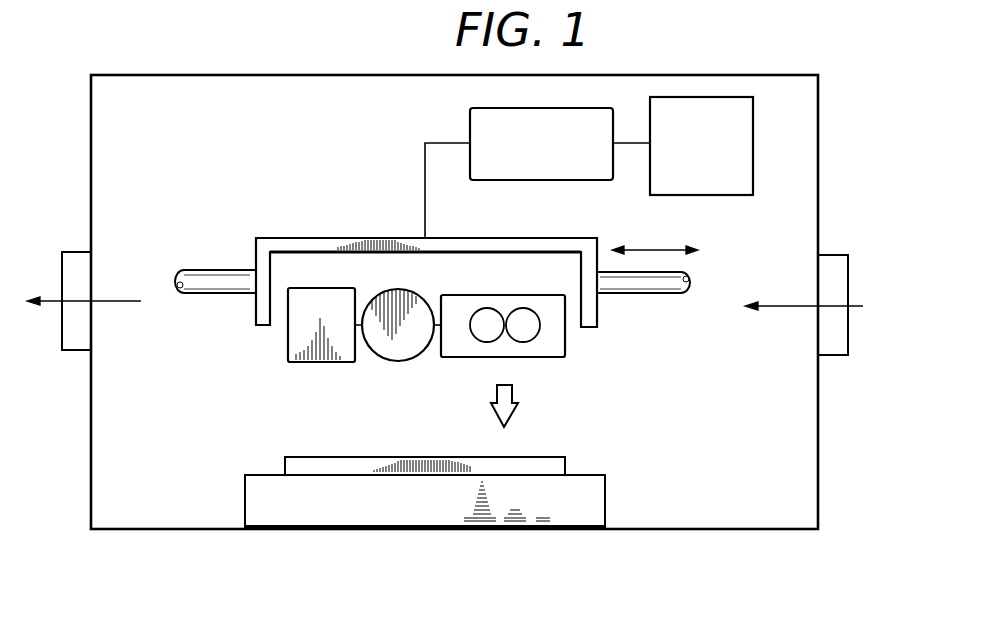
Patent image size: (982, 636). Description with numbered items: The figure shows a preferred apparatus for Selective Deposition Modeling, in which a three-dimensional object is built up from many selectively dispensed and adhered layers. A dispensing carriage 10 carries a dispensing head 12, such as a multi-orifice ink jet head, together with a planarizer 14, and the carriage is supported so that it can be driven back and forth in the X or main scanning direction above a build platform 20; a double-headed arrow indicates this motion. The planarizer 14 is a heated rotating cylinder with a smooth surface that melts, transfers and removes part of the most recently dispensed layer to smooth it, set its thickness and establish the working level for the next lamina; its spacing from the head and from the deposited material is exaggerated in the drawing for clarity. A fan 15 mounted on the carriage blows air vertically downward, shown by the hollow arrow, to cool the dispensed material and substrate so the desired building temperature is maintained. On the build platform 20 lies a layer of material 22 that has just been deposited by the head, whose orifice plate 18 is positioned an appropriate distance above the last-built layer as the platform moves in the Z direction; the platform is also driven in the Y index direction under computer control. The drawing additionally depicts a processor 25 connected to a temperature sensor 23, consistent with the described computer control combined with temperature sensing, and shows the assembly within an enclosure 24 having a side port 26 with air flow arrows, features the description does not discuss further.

The dispensing carriage 10 is at (497, 238).
The dispensing head 12 is at (288, 339).
The planarizer 14 is at (398, 362).
The fan 15 is at (560, 358).
The orifice plate 18 is at (323, 362).
The build platform 20 is at (545, 528).
The layer of material 22 is at (567, 467).
The temperature sensor 23 is at (755, 108).
The housing 24 is at (820, 472).
The processor 25 is at (470, 127).
The air inlet port 26 is at (857, 308).